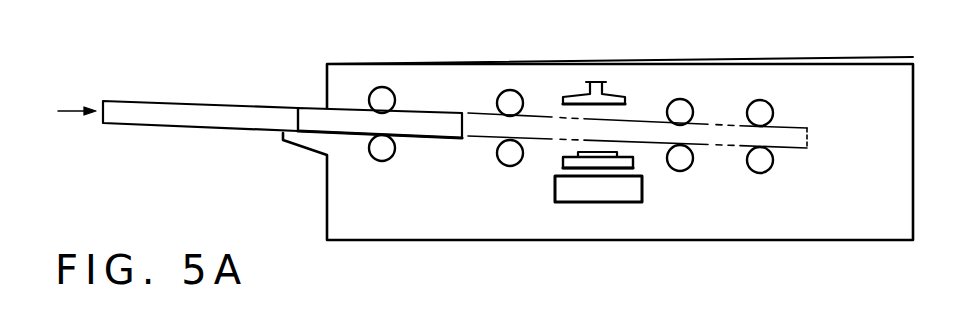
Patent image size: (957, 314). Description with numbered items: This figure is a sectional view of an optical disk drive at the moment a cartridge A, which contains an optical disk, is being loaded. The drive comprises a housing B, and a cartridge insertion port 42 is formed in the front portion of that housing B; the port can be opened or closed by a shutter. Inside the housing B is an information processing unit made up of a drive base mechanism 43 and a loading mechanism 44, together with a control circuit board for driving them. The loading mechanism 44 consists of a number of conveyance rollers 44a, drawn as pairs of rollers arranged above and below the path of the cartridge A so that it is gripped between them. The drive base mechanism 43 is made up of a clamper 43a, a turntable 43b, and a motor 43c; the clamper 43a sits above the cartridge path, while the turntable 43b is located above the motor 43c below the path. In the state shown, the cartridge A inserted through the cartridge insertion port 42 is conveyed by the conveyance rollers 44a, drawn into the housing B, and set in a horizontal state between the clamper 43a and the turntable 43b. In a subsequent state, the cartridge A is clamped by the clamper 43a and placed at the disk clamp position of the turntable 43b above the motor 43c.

The cartridge A is at (127, 124).
The housing B is at (855, 58).
The cartridge insertion port 42 is at (322, 104).
The drive base mechanism 43 is at (659, 204).
The clamper 43a is at (612, 95).
The turntable 43b is at (563, 162).
The motor 43c is at (613, 193).
The loading mechanism 44 is at (436, 89).
The conveyance rollers 44a is at (385, 87).